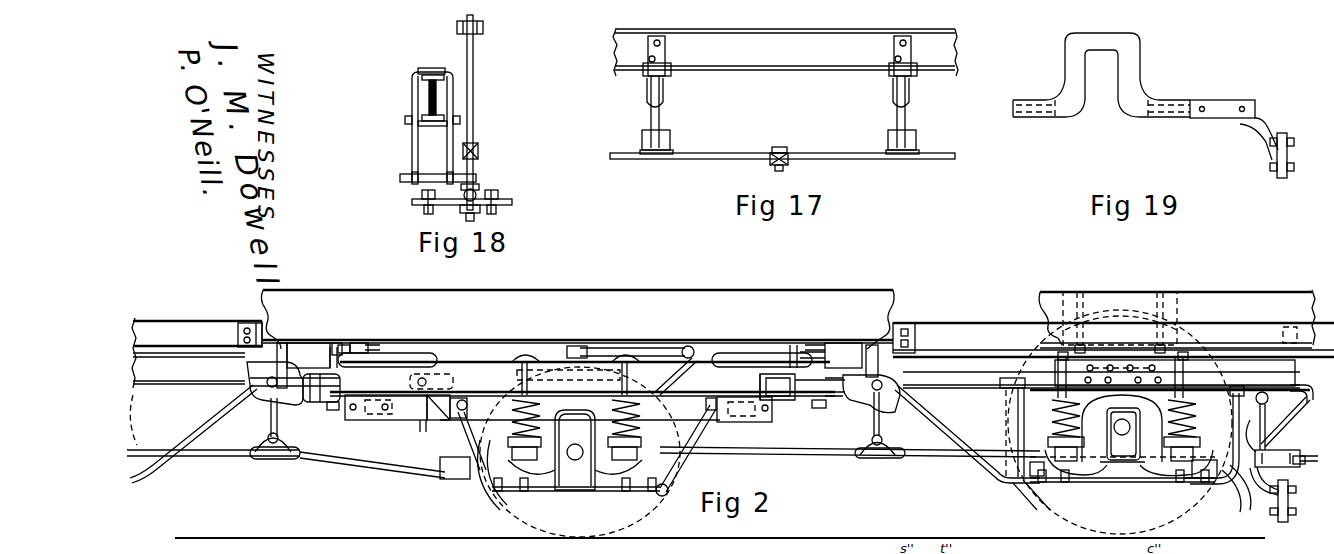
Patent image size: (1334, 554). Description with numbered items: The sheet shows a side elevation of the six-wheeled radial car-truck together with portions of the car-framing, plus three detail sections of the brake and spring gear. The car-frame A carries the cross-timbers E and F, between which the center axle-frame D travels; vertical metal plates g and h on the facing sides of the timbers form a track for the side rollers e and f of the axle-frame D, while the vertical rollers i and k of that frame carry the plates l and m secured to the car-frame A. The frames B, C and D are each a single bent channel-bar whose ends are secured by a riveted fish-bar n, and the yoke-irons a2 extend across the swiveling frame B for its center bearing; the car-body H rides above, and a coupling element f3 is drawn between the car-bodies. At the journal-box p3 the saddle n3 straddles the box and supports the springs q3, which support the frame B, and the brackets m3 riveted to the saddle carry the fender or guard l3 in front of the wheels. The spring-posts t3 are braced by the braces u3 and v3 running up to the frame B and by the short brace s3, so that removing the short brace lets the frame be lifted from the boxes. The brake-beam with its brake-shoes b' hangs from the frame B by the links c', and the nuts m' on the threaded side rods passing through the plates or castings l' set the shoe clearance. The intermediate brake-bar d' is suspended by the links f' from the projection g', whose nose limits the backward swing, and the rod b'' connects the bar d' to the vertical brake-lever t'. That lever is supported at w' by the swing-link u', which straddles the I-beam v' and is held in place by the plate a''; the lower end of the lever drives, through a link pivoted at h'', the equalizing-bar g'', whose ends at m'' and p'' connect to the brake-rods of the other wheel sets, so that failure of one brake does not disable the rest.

In FIG. 18, the vertical brake-lever t' is at (482, 112).
In FIG. 18, the swing-link u' is at (418, 127).
In FIG. 18, the plate or casting a'' is at (431, 56).
In FIG. 18, the I-beam v' is at (418, 98).
In FIG. 2, the I-beam v' is at (584, 396).
In FIG. 18, the fulcrum w' is at (457, 171).
In FIG. 18, the equalizing-bar g'' is at (440, 212).
In FIG. 18, the pivotal connection of brake-rod n'' p'' is at (399, 198).
In FIG. 18, the pivotal connection of brake-rod k'' m'' is at (515, 198).
In FIG. 18, the pivot of equalizing-bar h'' is at (499, 217).
In FIG. 17, the swiveling axle-frame B is at (785, 52).
In FIG. 2, the swiveling axle-frame B is at (982, 500).
In FIG. 17, the projection or casting g' is at (780, 71).
In FIG. 17, the links f' is at (784, 115).
In FIG. 2, the links f' is at (515, 434).
In FIG. 17, the intermediate brake-bar d' is at (782, 145).
In FIG. 17, the rod b'' is at (766, 148).
In FIG. 19, the saddle n3 is at (1138, 62).
In FIG. 19, the box p3 is at (1196, 100).
In FIG. 2, the box p3 is at (1159, 422).
In FIG. 19, the brackets m3 is at (1250, 124).
In FIG. 2, the brackets m3 is at (1258, 498).
In FIG. 19, the fender or guard l3 is at (1288, 152).
In FIG. 2, the fender or guard l3 is at (1287, 501).
In FIG. 2, the axle-frame C is at (216, 381).
In FIG. 2, the car-frame A is at (577, 339).
In FIG. 2, the cross-timber F is at (308, 356).
In FIG. 2, the cross-timber E is at (843, 356).
In FIG. 2, the drawhead f3 is at (838, 398).
In FIG. 2, the coupler link c is at (835, 411).
In FIG. 2, the vertical metal plate h is at (327, 343).
In FIG. 2, the side roller f is at (343, 335).
In FIG. 2, the plate m is at (363, 335).
In FIG. 2, the vertical roller k is at (380, 347).
In FIG. 2, the vertical roller i is at (775, 346).
In FIG. 2, the plate l is at (793, 335).
In FIG. 2, the side roller e is at (816, 350).
In FIG. 2, the vertical metal plate g is at (822, 340).
In FIG. 2, the axle-frame D is at (582, 415).
In FIG. 2, the yoke-irons a2 is at (1113, 355).
In FIG. 2, the hopper body H is at (1177, 321).
In FIG. 2, the fish-bar n is at (1175, 373).
In FIG. 2, the springs q3 is at (1052, 412).
In FIG. 2, the spring-posts t3 is at (1058, 366).
In FIG. 2, the brace v3 is at (972, 422).
In FIG. 2, the brace u3 is at (1219, 424).
In FIG. 2, the links c' is at (1292, 421).
In FIG. 2, the brake-shoes b' is at (1276, 434).
In FIG. 2, the nuts m' is at (1290, 451).
In FIG. 2, the plates or castings l' is at (1302, 471).
In FIG. 2, the short brace s3 is at (1150, 484).